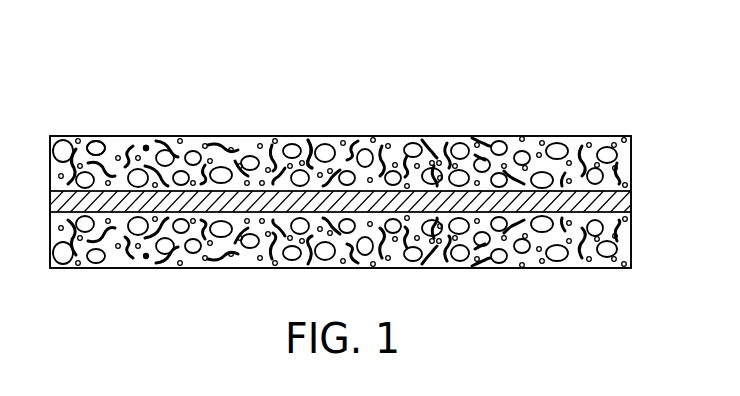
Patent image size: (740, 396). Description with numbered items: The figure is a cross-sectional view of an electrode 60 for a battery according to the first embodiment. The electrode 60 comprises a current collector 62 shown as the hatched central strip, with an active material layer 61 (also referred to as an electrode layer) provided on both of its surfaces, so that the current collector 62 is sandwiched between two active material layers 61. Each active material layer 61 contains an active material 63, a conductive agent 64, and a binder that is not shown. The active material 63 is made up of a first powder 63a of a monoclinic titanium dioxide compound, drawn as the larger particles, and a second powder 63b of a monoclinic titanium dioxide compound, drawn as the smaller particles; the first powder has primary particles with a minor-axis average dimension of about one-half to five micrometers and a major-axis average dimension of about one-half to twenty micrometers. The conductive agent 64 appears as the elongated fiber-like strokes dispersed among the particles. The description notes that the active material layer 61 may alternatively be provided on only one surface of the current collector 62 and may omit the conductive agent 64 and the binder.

The electrode 60 is at (552, 78).
The active material layer 61 is at (631, 162).
The current collector 62 is at (631, 201).
The active material 63 is at (175, 90).
The first powder 63a is at (100, 143).
The second powder 63b is at (146, 146).
The conductive agent 64 is at (302, 143).